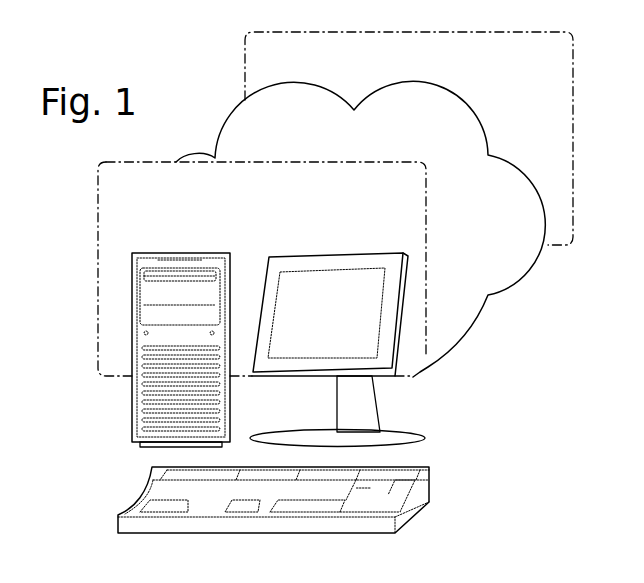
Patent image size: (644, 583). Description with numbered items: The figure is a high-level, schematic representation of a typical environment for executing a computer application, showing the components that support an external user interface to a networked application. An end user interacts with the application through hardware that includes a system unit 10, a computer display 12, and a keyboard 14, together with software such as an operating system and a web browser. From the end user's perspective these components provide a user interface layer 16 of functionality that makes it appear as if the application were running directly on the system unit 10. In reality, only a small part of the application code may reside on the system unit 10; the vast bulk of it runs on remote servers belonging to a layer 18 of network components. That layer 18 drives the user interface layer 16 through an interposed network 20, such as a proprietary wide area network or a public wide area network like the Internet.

The system unit 10 is at (132, 427).
The computer display 12 is at (425, 438).
The keyboard 14 is at (434, 487).
The user interface layer 16 is at (97, 223).
The layer of network components 18 is at (573, 35).
The network 20 is at (484, 309).